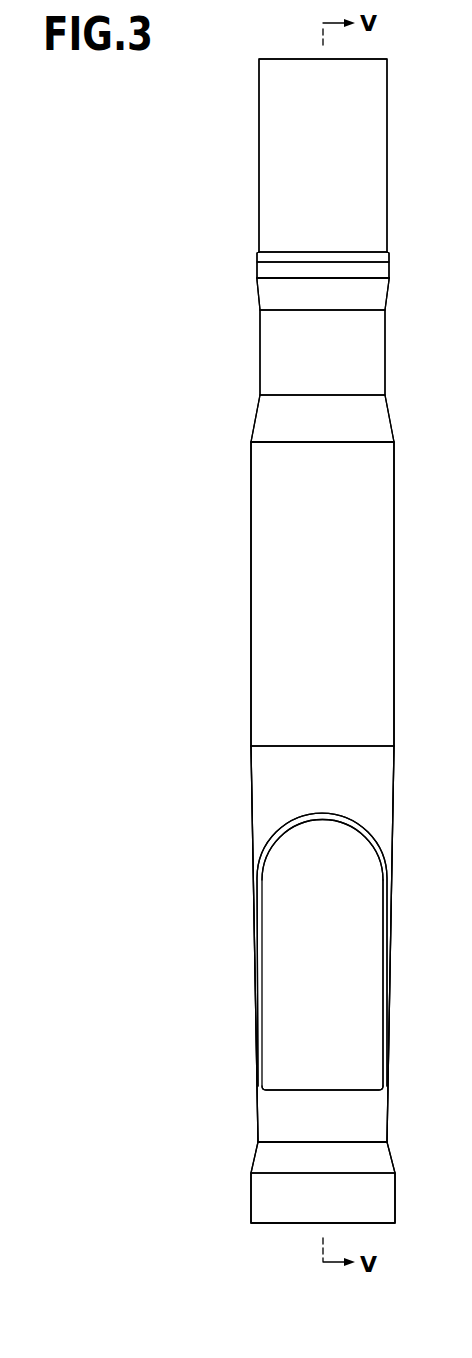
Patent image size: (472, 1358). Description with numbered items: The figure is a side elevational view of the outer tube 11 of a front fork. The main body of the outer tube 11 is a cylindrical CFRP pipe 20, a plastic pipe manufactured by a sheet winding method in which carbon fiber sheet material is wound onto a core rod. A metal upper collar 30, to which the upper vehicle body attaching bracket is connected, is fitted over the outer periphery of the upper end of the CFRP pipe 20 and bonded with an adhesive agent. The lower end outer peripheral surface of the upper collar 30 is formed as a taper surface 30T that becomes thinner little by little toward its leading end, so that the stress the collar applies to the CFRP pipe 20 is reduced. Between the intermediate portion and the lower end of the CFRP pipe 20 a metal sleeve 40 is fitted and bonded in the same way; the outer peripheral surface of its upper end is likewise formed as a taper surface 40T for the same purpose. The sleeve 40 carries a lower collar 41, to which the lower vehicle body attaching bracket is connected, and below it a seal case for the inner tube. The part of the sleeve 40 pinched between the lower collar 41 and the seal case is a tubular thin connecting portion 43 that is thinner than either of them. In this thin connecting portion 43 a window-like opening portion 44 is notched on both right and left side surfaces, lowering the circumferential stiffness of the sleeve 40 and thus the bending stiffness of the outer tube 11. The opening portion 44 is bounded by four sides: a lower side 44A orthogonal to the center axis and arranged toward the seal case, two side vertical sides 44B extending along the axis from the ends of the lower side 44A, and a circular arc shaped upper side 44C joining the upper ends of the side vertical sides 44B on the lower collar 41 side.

The outer tube 11 is at (160, 200).
The upper collar 30 is at (252, 130).
The taper surface 30T is at (270, 294).
The CFRP pipe 20 is at (260, 348).
The taper surface 40T is at (270, 418).
The sleeve 40 is at (251, 527).
The lower collar 41 is at (265, 612).
The thin connecting portion 43 is at (258, 1016).
The opening portion 44 is at (262, 903).
The lower side 44A is at (327, 1090).
The side vertical sides 44B is at (383, 983).
The upper side 44C is at (330, 818).